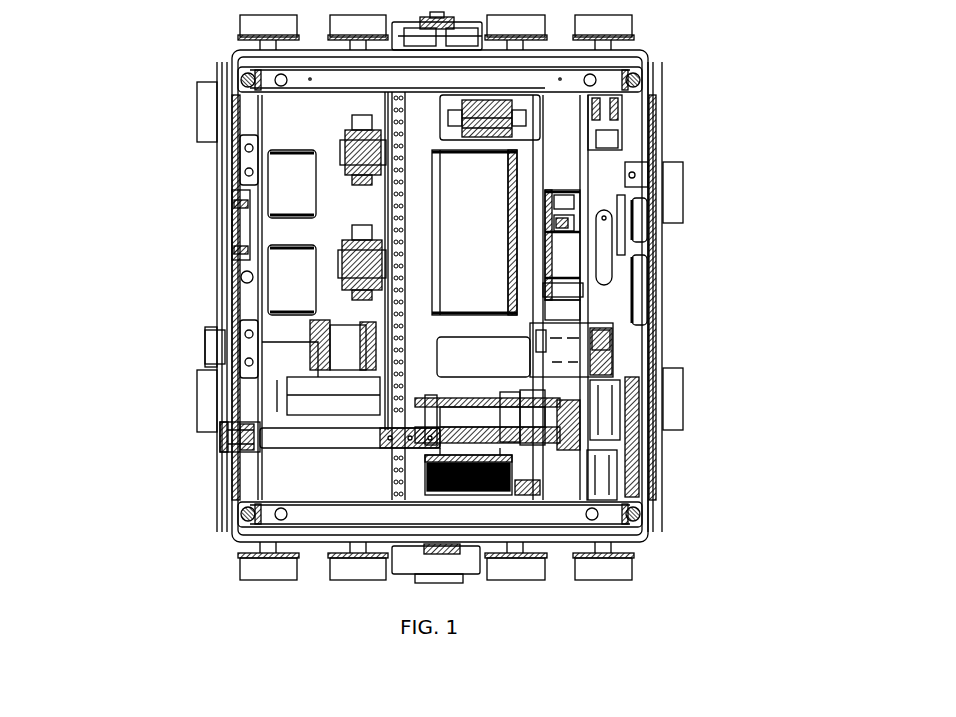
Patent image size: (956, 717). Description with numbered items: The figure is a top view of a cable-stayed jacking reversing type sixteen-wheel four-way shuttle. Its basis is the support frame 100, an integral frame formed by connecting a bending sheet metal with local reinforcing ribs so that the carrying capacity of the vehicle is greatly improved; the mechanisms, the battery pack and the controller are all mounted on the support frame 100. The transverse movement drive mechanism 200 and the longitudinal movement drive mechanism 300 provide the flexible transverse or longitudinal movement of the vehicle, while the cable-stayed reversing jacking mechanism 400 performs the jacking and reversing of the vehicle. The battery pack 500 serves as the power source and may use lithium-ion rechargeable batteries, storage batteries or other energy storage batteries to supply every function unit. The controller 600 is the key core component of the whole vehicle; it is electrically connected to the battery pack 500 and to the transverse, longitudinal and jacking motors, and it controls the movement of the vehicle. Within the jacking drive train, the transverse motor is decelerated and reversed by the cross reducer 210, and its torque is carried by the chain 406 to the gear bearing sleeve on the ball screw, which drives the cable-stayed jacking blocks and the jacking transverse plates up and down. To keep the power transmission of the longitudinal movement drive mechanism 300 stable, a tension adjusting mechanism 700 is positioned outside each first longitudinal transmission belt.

The support frame 100 is at (230, 149).
The transverse movement drive mechanism 200 is at (548, 249).
The cross reducer 210 is at (493, 359).
The longitudinal movement drive mechanism 300 is at (475, 417).
The cable-stayed reversing jacking mechanism 400 is at (375, 79).
The chain 406 is at (400, 290).
The battery pack 500 is at (475, 175).
The controller 600 is at (288, 283).
The tension adjusting mechanism 700 is at (235, 438).